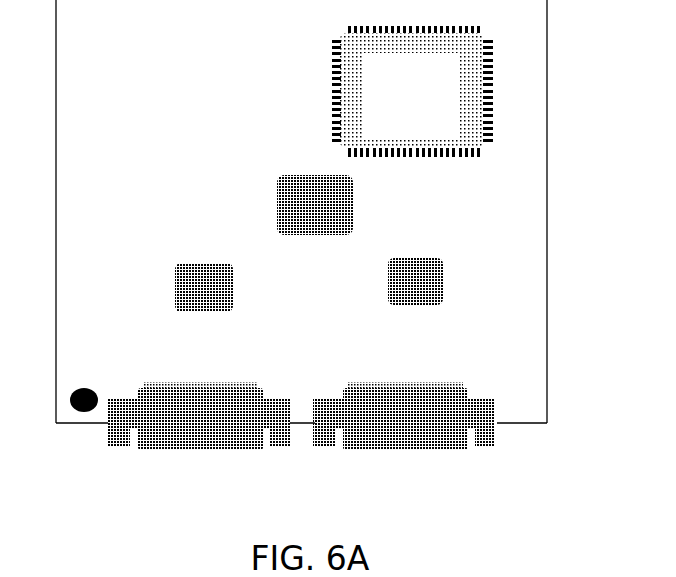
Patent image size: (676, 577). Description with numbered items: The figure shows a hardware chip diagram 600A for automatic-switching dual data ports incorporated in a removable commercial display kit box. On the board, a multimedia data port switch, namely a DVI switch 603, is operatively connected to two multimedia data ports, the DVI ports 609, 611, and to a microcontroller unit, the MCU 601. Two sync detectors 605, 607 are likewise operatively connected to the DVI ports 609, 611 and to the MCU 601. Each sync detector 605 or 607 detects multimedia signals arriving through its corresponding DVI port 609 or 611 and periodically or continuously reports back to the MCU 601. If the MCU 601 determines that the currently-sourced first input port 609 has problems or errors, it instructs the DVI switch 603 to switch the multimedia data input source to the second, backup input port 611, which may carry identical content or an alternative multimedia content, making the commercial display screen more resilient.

The hardware chip diagram 600A is at (276, 516).
The microcontroller unit (MCU) 601 is at (412, 91).
The DVI switch 603 is at (294, 198).
The sync detector 605 is at (192, 274).
The sync detector 607 is at (419, 277).
The DVI port 609 is at (149, 453).
The DVI port 611 is at (465, 454).